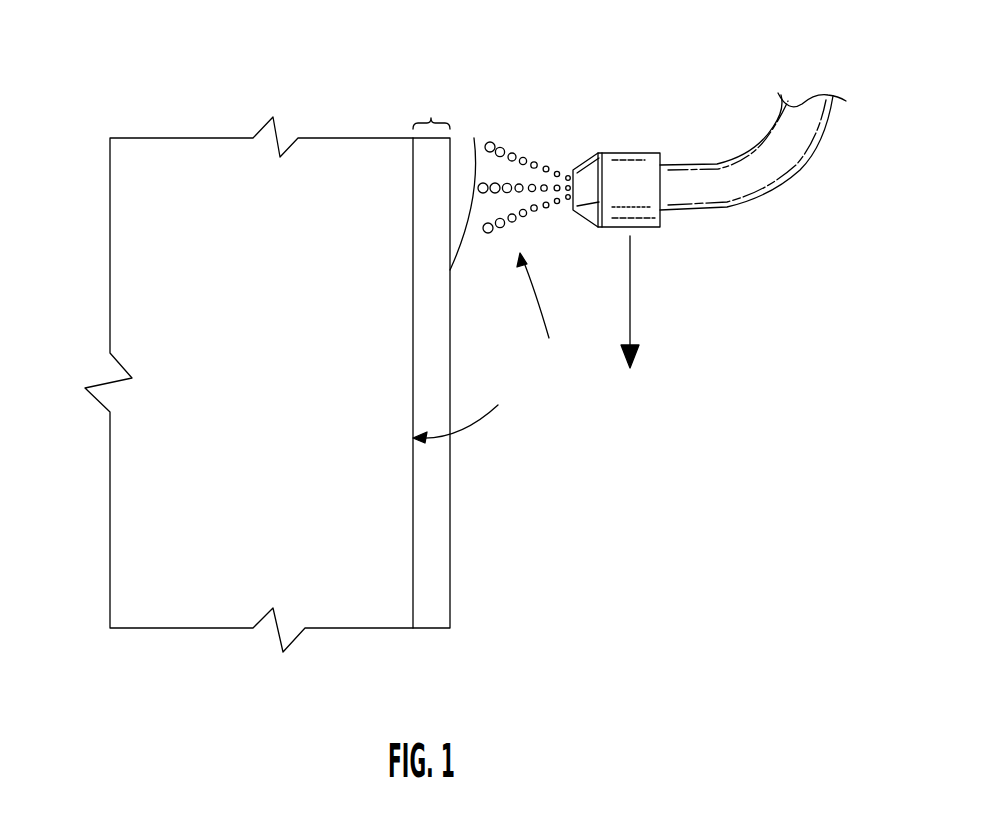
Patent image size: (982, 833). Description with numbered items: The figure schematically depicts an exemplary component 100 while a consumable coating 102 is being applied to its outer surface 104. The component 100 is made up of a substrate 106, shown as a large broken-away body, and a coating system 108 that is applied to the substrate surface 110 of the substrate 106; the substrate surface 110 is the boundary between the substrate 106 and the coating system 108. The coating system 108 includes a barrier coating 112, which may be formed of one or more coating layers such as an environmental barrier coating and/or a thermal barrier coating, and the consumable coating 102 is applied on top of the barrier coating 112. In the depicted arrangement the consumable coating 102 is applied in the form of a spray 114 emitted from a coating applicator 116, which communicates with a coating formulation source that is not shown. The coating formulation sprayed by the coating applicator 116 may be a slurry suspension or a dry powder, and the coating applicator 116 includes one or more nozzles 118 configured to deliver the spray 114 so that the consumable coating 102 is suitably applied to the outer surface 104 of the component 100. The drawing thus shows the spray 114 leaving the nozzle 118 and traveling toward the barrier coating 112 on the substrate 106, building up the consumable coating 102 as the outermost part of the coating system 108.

The component 100 is at (133, 90).
The consumable coating 102 is at (470, 145).
The outer surface 104 is at (508, 423).
The substrate 106 is at (288, 412).
The coating system 108 is at (436, 107).
The substrate surface 110 is at (463, 408).
The barrier coating 112 is at (432, 612).
The spray 114 is at (544, 312).
The coating applicator 116 is at (709, 190).
The nozzle 118 is at (640, 224).